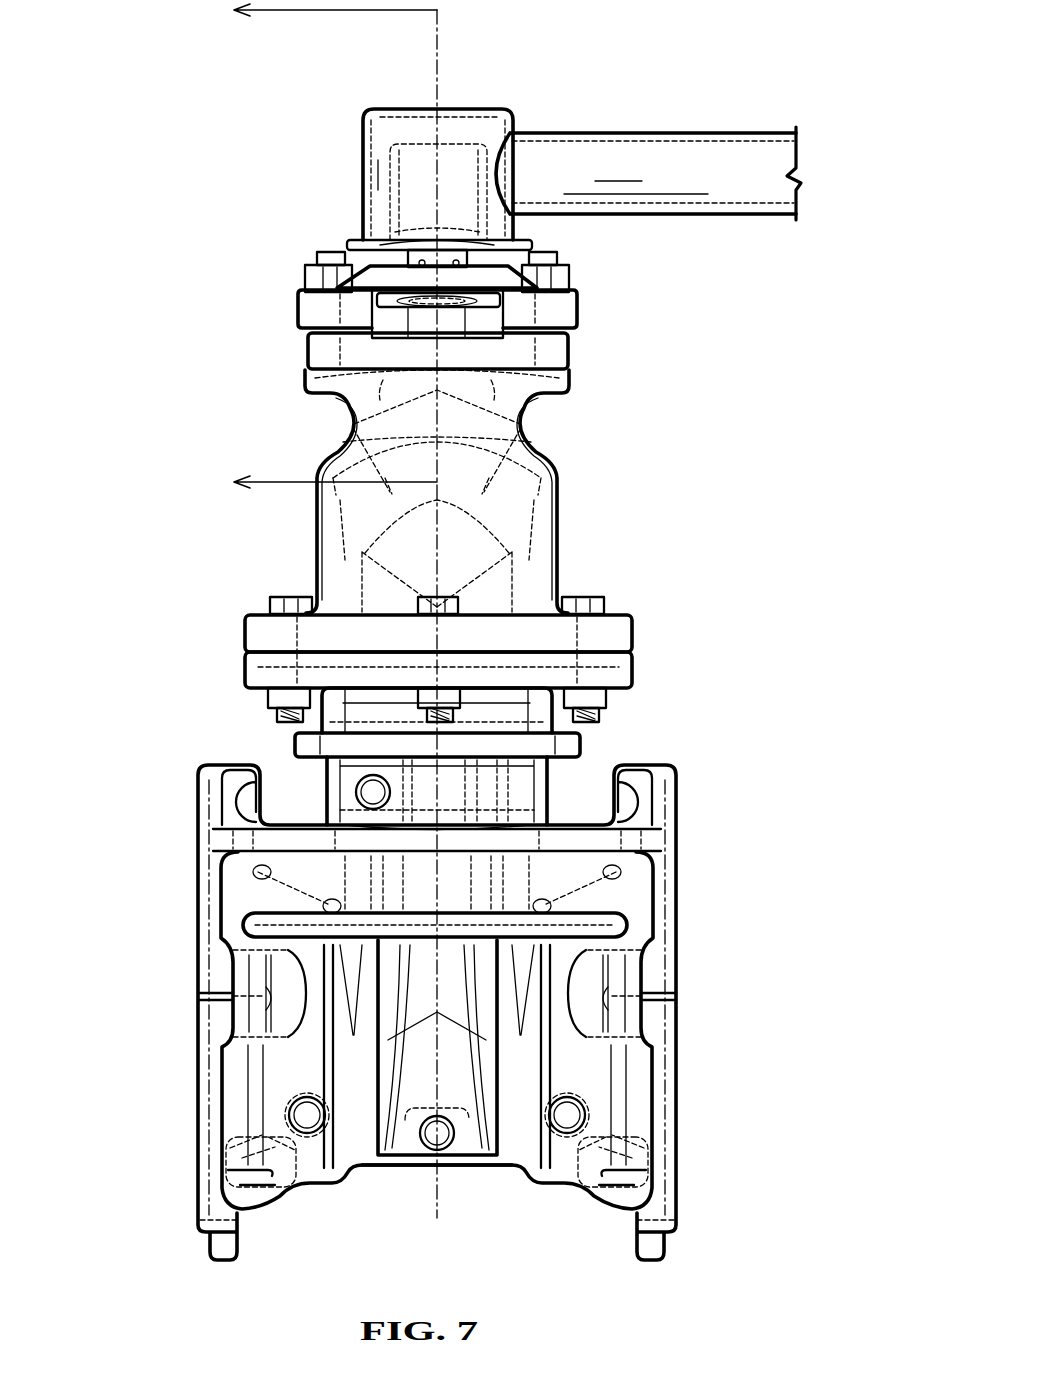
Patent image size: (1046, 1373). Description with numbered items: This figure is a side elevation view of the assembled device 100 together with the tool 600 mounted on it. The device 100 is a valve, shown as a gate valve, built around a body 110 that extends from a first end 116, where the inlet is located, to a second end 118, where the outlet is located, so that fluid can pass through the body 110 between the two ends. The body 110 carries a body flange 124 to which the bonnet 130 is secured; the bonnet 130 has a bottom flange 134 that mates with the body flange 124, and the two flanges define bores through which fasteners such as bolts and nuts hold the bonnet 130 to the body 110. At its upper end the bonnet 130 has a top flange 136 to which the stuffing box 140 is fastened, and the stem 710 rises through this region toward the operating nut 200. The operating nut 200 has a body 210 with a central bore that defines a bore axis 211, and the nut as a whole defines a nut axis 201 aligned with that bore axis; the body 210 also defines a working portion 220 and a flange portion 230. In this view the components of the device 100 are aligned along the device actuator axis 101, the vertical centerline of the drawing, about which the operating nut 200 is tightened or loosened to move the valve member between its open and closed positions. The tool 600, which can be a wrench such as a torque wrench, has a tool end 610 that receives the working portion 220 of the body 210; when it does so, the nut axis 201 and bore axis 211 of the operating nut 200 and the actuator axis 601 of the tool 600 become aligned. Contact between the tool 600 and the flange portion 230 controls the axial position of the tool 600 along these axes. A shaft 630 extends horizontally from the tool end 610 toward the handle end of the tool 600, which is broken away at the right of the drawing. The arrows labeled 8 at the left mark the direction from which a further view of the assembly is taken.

The section line for FIG. 8 is at (319, 250).
The actuator axis 601 is at (438, 60).
The tool end 610 is at (360, 134).
The working portion 220 is at (388, 208).
The tool 600 is at (655, 146).
The shaft 630 is at (750, 153).
The operating nut 200 is at (303, 228).
The body 210 is at (303, 228).
The flange portion 230 is at (360, 240).
The stem 710 is at (546, 265).
The stuffing box 140 is at (303, 317).
The top flange 136 is at (553, 353).
The bonnet 130 is at (545, 527).
The device 100 is at (418, 491).
The bottom flange 134 is at (633, 614).
The body flange 124 is at (617, 670).
The first end 116 is at (200, 826).
The second end 118 is at (678, 808).
The body 110 is at (463, 1160).
The axis 101 is at (401, 1223).
The nut axis 201 is at (401, 1223).
The bore axis 211 is at (437, 1190).